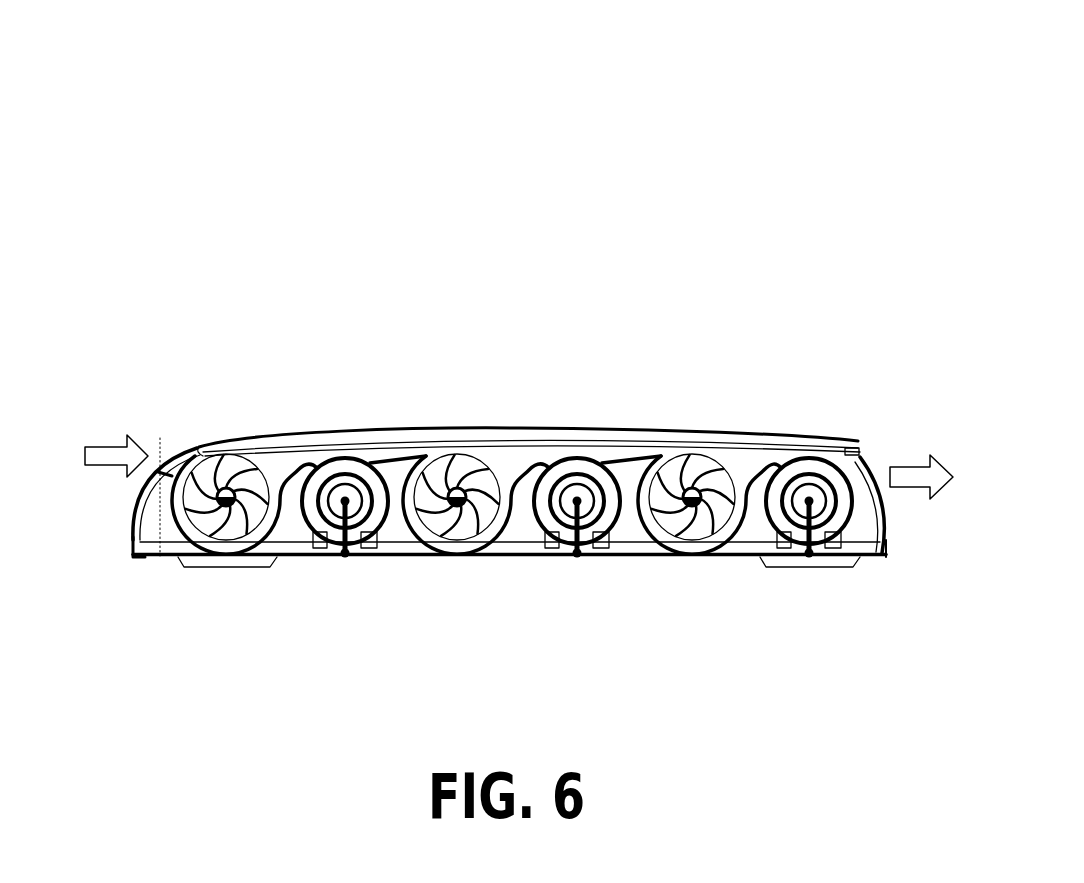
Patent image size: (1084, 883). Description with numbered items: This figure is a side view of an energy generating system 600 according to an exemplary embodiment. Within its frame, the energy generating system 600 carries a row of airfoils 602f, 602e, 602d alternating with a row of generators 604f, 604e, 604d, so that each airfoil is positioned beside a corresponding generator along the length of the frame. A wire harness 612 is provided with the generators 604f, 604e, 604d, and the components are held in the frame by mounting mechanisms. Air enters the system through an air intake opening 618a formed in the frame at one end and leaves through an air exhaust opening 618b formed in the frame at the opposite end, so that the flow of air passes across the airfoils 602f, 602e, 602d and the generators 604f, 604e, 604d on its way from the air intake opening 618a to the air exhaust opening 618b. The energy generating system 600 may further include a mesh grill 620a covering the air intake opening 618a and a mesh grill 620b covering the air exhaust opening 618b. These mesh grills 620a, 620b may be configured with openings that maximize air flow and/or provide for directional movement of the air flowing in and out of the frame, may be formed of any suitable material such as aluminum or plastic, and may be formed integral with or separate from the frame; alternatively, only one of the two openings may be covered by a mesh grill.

The energy generating system 600 is at (429, 140).
The airfoil 602d is at (673, 517).
The airfoil 602e is at (436, 538).
The airfoil 602f is at (210, 538).
The generator 604d is at (792, 473).
The generator 604e is at (576, 462).
The generator 604f is at (333, 475).
The wire harness 612 is at (345, 555).
The air intake opening 618a is at (97, 445).
The air exhaust opening 618b is at (921, 455).
The mesh grill 620a is at (182, 460).
The mesh grill 620b is at (858, 452).